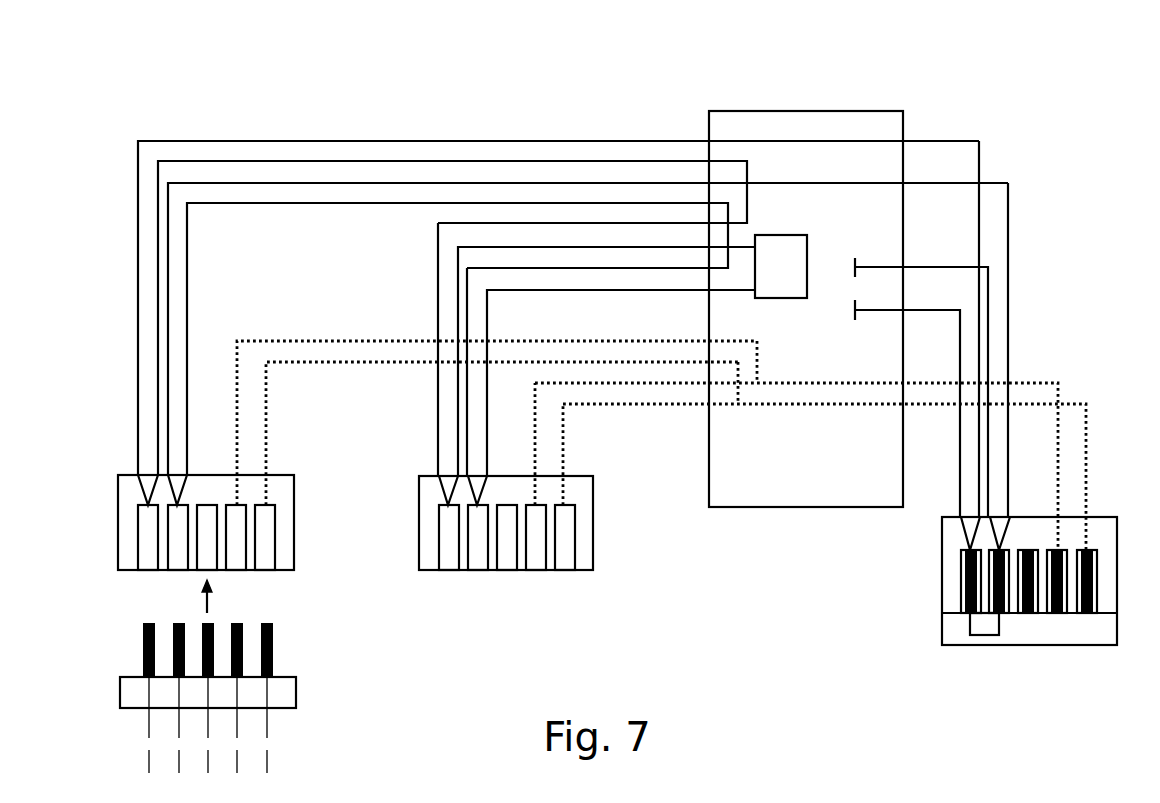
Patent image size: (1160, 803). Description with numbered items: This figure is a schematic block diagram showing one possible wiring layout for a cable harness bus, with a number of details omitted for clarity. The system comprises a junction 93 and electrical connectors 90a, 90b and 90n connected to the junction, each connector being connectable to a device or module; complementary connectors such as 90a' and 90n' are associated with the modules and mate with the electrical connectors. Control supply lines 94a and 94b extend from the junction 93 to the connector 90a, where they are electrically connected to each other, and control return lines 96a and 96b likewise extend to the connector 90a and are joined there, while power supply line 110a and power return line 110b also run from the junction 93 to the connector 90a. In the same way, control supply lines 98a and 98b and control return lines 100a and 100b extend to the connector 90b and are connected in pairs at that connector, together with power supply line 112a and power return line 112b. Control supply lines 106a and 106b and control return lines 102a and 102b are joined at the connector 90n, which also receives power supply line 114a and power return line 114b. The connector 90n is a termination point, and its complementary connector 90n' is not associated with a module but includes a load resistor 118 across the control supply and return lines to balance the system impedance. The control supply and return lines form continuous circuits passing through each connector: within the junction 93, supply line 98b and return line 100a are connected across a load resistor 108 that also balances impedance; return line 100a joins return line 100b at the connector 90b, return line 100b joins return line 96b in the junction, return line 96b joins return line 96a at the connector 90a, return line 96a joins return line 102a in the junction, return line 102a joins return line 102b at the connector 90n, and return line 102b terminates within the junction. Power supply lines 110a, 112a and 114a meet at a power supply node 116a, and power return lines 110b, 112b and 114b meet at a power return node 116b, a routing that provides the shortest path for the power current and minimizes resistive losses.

The junction 93 is at (795, 120).
The load resistor 108 is at (781, 266).
The control supply line 94a is at (216, 140).
The control supply line 94b is at (265, 160).
The control return line 96a is at (313, 182).
The control return line 96b is at (353, 203).
The control supply line 98a is at (438, 257).
The control supply line 98b is at (457, 288).
The control return line 100a is at (487, 332).
The control return line 100b is at (467, 310).
The control return line 102a is at (1001, 183).
The control return line 102b is at (988, 277).
The control supply line 106a is at (952, 138).
The control supply line 106b is at (960, 362).
The power supply line 110a is at (245, 338).
The power return line 110b is at (302, 362).
The power supply line 112a is at (630, 383).
The power return line 112b is at (581, 404).
The power supply line 114a is at (1020, 384).
The power return line 114b is at (1067, 404).
The power supply node 116a is at (757, 383).
The power return node 116b is at (738, 404).
The electrical connector 90a is at (237, 544).
The electrical connector 90b is at (419, 515).
The electrical connector 90n is at (968, 581).
The complementary connector 90n' is at (976, 650).
The load resistor 118 is at (987, 635).
The complementary connector 90a' is at (248, 698).